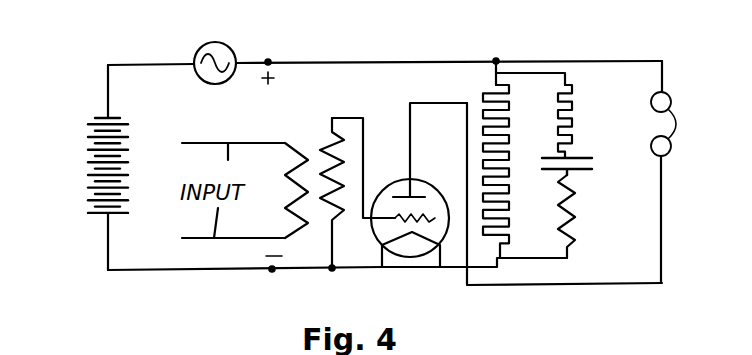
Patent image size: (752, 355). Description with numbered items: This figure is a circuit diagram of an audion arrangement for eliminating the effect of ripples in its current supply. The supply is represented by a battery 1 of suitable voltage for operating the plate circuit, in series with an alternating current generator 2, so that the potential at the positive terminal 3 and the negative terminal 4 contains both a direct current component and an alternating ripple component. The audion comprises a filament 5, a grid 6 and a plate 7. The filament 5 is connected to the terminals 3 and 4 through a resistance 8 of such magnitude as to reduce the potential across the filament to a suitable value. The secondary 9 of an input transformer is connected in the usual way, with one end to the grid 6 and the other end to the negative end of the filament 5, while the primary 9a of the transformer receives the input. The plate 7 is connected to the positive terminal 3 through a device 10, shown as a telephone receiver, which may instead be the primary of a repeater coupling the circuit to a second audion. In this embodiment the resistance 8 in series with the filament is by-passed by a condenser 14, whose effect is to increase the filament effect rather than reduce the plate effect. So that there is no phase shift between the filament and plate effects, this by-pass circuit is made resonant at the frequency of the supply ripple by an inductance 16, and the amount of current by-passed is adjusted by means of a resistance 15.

The battery 1 is at (84, 172).
The alternating current generator 2 is at (249, 40).
The positive terminal 3 is at (272, 60).
The negative terminal 4 is at (272, 270).
The filament 5 is at (419, 196).
The grid 6 is at (397, 213).
The plate 7 is at (422, 193).
The resistance 8 is at (510, 227).
The secondary of input transformer 9 is at (328, 146).
The primary of input transformer 9a is at (296, 163).
The telephone receiver device 10 is at (683, 114).
The condenser 14 is at (582, 171).
The resistance 15 is at (576, 119).
The inductance 16 is at (570, 213).